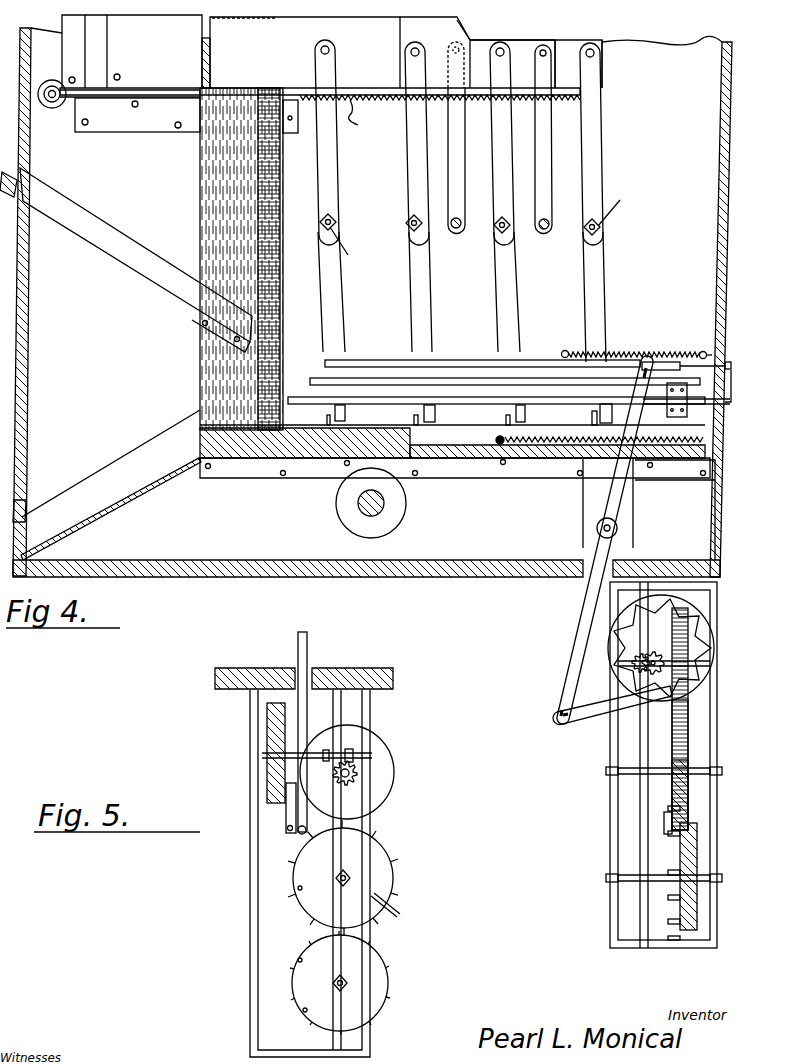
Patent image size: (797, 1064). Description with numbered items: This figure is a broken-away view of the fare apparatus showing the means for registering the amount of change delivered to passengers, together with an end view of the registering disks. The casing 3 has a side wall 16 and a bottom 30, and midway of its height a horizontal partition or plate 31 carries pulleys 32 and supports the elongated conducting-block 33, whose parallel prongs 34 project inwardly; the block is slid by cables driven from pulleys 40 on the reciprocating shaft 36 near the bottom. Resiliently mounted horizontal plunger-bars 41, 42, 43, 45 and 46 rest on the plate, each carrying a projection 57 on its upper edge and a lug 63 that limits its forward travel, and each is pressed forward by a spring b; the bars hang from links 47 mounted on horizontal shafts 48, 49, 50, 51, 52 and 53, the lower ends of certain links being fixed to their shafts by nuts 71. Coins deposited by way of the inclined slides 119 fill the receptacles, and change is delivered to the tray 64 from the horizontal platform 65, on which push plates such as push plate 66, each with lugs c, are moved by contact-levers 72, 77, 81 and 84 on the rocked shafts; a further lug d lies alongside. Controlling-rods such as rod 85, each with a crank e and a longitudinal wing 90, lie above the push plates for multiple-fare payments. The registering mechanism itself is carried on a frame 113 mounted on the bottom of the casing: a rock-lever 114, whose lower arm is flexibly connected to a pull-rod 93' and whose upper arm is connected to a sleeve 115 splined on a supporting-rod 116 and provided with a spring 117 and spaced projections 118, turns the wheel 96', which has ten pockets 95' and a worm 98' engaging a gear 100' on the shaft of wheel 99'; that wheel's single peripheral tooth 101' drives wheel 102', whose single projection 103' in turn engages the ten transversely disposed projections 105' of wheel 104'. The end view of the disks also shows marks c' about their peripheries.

In FIG. 4, the casing 3 is at (694, 42).
In FIG. 4, the wall 16 is at (26, 283).
In FIG. 4, the bottom 30 is at (455, 578).
In FIG. 5, the bottom 30 is at (374, 666).
In FIG. 4, the horizontal partition or plate 31 is at (180, 88).
In FIG. 4, the pulleys 32 is at (48, 108).
In FIG. 4, the conducting-block 33 is at (97, 78).
In FIG. 4, the prongs 34 is at (147, 82).
In FIG. 4, the shaft 36 is at (380, 510).
In FIG. 4, the pulleys 40 is at (336, 505).
In FIG. 4, the plunger-bar 41 is at (358, 14).
In FIG. 4, the plunger-bar 42 is at (468, 34).
In FIG. 4, the plunger-bar 43 is at (493, 40).
In FIG. 4, the plunger-bar 45 is at (541, 42).
In FIG. 4, the plunger-bar 46 is at (600, 42).
In FIG. 4, the links 47 is at (318, 187).
In FIG. 4, the shaft 48 is at (344, 218).
In FIG. 4, the shaft 49 is at (405, 228).
In FIG. 4, the shaft 50 is at (447, 232).
In FIG. 4, the shaft 51 is at (462, 224).
In FIG. 4, the shaft 52 is at (545, 149).
In FIG. 4, the shaft 53 is at (601, 226).
In FIG. 4, the projection 57 is at (276, 18).
In FIG. 4, the lug 63 is at (300, 107).
In FIG. 4, the slide or tray 64 is at (133, 433).
In FIG. 4, the horizontal platform 65 is at (252, 460).
In FIG. 4, the push plate 66 is at (468, 421).
In FIG. 4, the nuts 71 is at (486, 229).
In FIG. 4, the contact-lever 72 is at (342, 304).
In FIG. 4, the lever arm 77 is at (432, 298).
In FIG. 4, the contact-lever 81 is at (520, 298).
In FIG. 4, the contact-lever 84 is at (607, 292).
In FIG. 4, the controlling-rod 85 is at (703, 408).
In FIG. 4, the leaf or longitudinal wing 90 is at (532, 368).
In FIG. 4, the rock-lever 114 is at (598, 535).
In FIG. 5, the rock-lever 114 is at (308, 644).
In FIG. 4, the sleeve 115 is at (455, 366).
In FIG. 4, the horizontal supporting-rod 116 is at (728, 363).
In FIG. 4, the spring 117 is at (662, 352).
In FIG. 4, the projections 118 is at (413, 362).
In FIG. 4, the slides 119 is at (123, 258).
In FIG. 4, the frame 113 is at (641, 765).
In FIG. 5, the frame 113 is at (292, 873).
In FIG. 4, the pull-rod 93' is at (612, 721).
In FIG. 5, the pull-rod 93' is at (259, 818).
In FIG. 4, the pockets 95' is at (686, 648).
In FIG. 4, the wheel 96' is at (688, 648).
In FIG. 5, the wheel 96' is at (249, 753).
In FIG. 4, the worm 98' is at (664, 647).
In FIG. 5, the worm 98' is at (341, 739).
In FIG. 4, the wheel 99' is at (716, 719).
In FIG. 5, the wheel 99' is at (368, 772).
In FIG. 4, the gear 100' is at (666, 645).
In FIG. 5, the gear 100' is at (384, 783).
In FIG. 4, the single peripheral tooth 101' is at (722, 765).
In FIG. 5, the single peripheral tooth 101' is at (386, 797).
In FIG. 4, the wheel 102' is at (723, 795).
In FIG. 5, the wheel 102' is at (372, 878).
In FIG. 4, the single projection 103' is at (622, 828).
In FIG. 5, the single projection 103' is at (413, 907).
In FIG. 4, the wheel 104' is at (729, 876).
In FIG. 5, the wheel 104' is at (371, 983).
In FIG. 4, the transversely disposed projections 105' is at (695, 895).
In FIG. 5, the transversely disposed projections 105' is at (287, 1028).
In FIG. 4, the spring b is at (360, 120).
In FIG. 4, the lugs c is at (452, 413).
In FIG. 4, the lug d is at (530, 418).
In FIG. 4, the angular terminal or crank e is at (736, 388).
In FIG. 5, the pins c' is at (284, 924).